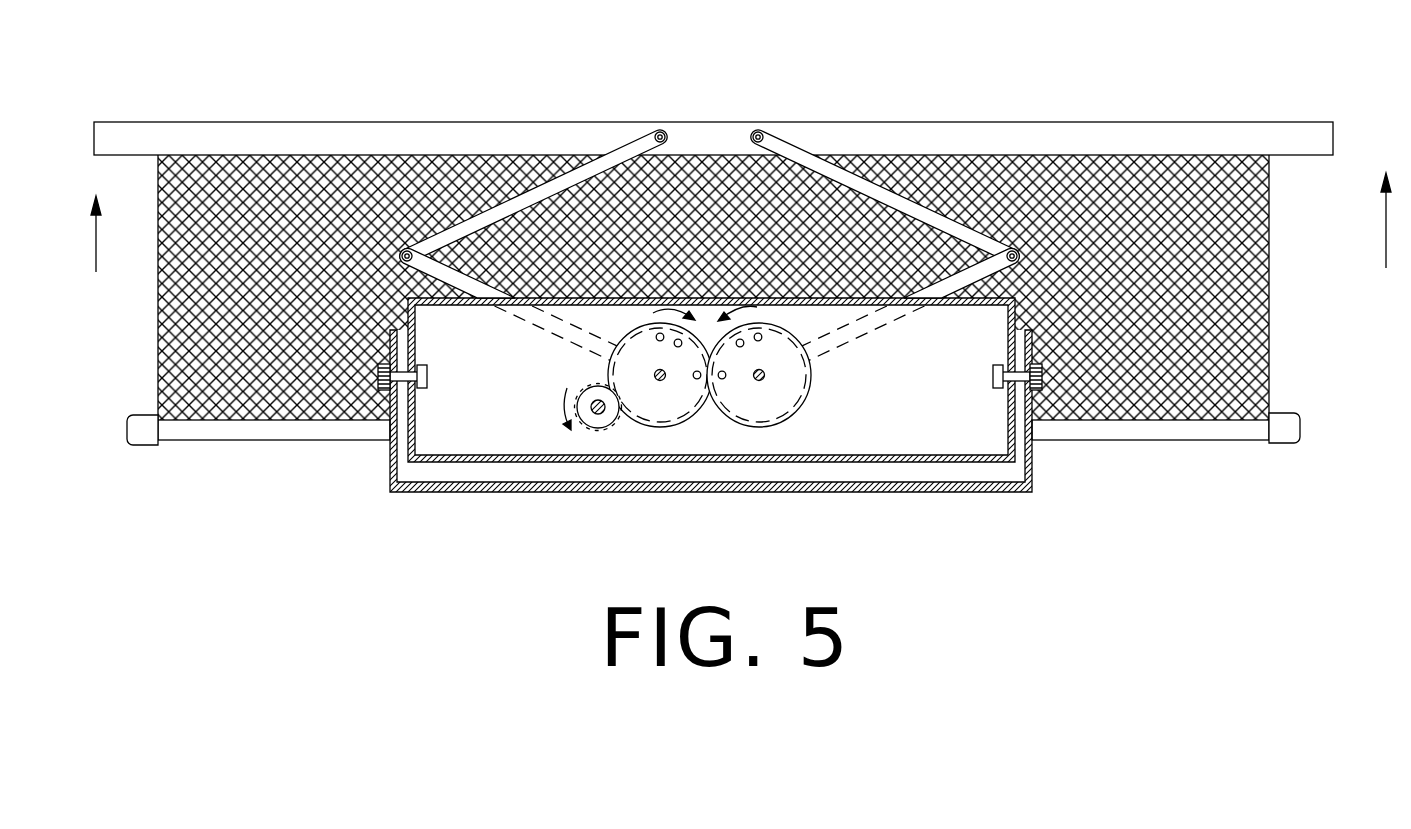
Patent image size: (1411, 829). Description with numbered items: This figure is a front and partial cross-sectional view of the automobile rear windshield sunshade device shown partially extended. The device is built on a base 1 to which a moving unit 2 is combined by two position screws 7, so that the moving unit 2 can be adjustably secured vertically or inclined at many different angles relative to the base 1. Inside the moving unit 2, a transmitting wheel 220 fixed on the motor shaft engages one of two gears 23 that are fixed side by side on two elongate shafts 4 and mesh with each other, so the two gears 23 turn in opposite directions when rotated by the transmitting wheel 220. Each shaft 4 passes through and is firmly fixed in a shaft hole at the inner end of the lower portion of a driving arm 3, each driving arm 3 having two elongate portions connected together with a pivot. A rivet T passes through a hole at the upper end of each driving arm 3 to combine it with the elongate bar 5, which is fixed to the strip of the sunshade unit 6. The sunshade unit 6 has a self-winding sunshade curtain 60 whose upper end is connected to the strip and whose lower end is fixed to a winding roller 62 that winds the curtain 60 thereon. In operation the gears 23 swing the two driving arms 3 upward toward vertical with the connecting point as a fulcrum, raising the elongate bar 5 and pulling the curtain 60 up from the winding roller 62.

The base 1 is at (475, 490).
The moving unit 2 is at (1015, 455).
The driving arm 3 is at (1008, 233).
The elongate shaft 4 is at (662, 382).
The elongate bar 5 is at (892, 130).
The sunshade unit 6 is at (1275, 360).
The position screw 7 is at (1275, 290).
The gear 23 is at (642, 405).
The sunshade curtain 60 is at (1233, 220).
The winding roller 62 is at (1282, 437).
The transmitting wheel 220 is at (583, 427).
The rivet T is at (660, 123).